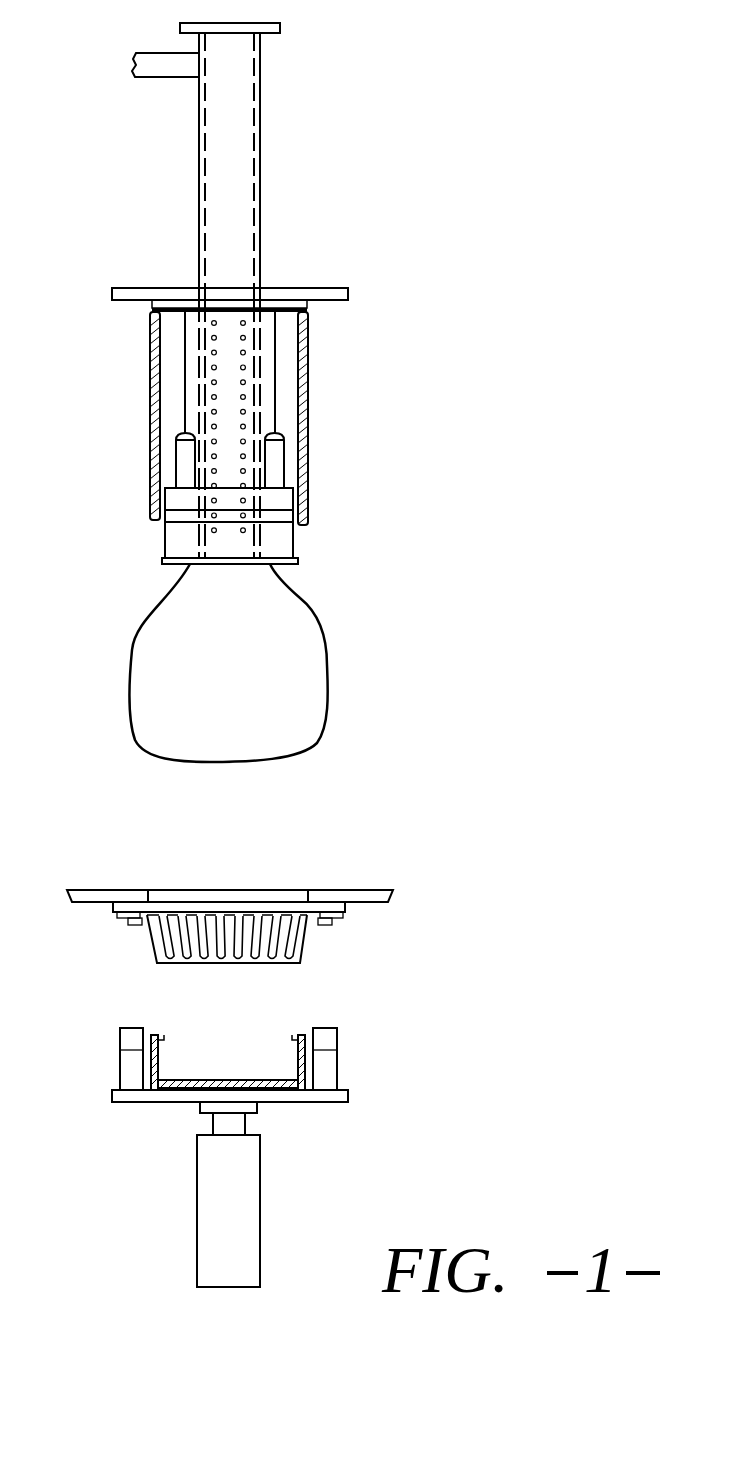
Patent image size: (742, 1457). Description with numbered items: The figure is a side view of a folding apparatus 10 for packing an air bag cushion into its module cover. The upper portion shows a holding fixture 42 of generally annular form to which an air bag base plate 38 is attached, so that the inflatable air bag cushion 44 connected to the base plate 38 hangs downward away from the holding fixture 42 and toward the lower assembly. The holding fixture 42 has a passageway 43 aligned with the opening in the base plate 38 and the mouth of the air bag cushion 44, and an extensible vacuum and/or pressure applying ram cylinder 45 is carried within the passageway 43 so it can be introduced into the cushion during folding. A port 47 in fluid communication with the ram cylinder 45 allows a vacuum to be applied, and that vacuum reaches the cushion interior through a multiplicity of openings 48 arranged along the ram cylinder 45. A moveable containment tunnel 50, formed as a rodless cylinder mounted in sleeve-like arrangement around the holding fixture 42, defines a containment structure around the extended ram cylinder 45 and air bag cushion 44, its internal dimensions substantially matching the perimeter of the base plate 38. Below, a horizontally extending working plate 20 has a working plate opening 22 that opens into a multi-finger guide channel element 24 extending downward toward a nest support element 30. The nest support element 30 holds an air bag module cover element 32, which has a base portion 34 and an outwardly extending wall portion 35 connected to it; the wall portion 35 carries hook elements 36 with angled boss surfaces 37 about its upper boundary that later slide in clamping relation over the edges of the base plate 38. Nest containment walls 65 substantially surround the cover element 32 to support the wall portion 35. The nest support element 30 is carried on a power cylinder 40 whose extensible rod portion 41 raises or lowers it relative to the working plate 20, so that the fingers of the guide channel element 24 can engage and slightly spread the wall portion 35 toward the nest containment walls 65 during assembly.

The folding apparatus 10 is at (361, 192).
The working plate 20 is at (263, 896).
The working plate opening 22 is at (267, 890).
The multi-finger guide channel element 24 is at (307, 933).
The nest support element 30 is at (354, 1086).
The air bag module cover element 32 is at (245, 1075).
The base portion 34 is at (282, 1090).
The wall portion 35 is at (152, 1068).
The hook elements 36 is at (158, 1035).
The angled boss surfaces 37 is at (163, 1042).
The air bag base plate 38 is at (165, 558).
The power cylinder 40 is at (262, 1188).
The extensible rod portion 41 is at (195, 1105).
The holding fixture 42 is at (157, 518).
The passageway 43 is at (258, 502).
The inflatable air bag cushion 44 is at (327, 665).
The ram cylinder 45 is at (248, 377).
The port 47 is at (163, 53).
The openings 48 is at (215, 430).
The containment tunnel 50 is at (310, 367).
The nest containment walls 65 is at (120, 1043).